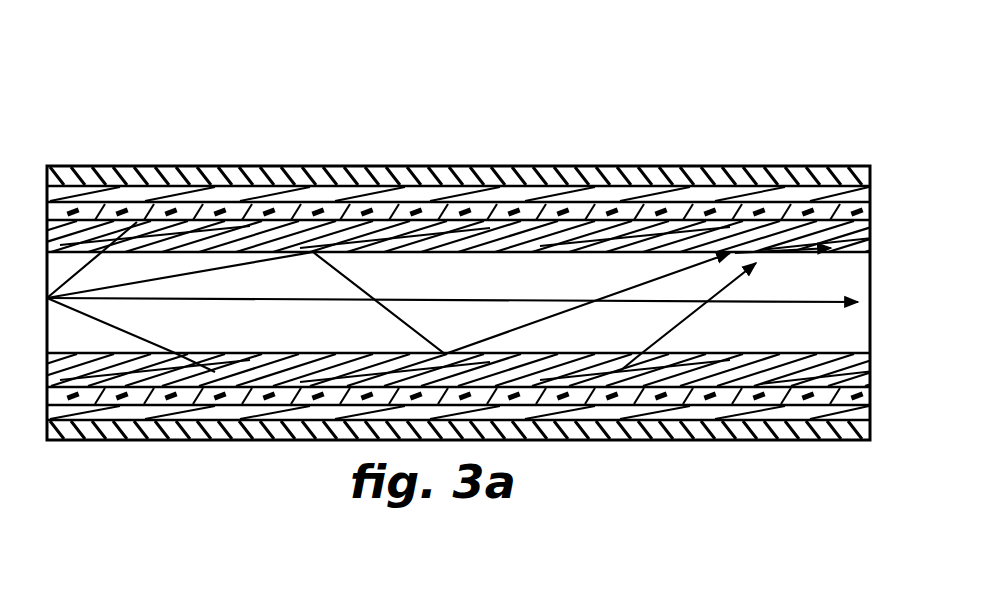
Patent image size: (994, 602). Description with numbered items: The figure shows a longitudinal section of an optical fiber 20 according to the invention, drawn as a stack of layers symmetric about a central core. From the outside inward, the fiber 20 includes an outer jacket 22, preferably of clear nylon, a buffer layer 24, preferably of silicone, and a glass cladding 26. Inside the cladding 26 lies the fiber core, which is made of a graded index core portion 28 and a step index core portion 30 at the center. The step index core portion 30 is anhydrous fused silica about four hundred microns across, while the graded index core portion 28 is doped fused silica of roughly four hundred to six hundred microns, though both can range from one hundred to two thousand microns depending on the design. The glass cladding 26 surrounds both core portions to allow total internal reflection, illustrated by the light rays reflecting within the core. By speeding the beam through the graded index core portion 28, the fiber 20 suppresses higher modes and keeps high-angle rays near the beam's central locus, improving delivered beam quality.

The optical fiber 20 is at (657, 128).
The outer jacket 22 is at (458, 184).
The buffer layer 24 is at (458, 422).
The cladding 26 is at (476, 208).
The graded index core portion 28 is at (654, 372).
The step index core portion 30 is at (783, 339).